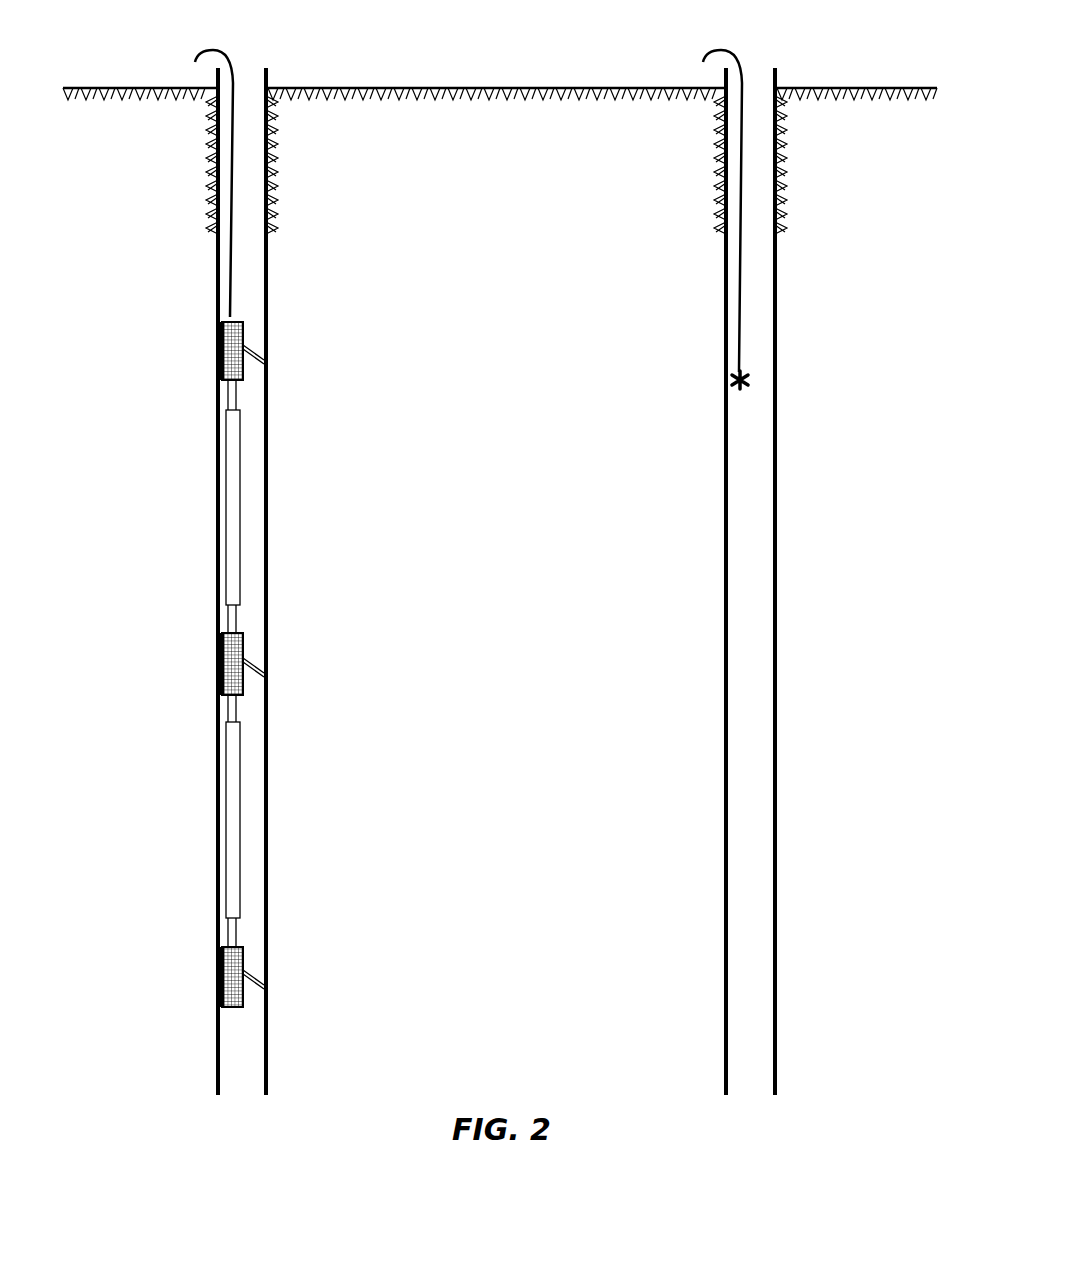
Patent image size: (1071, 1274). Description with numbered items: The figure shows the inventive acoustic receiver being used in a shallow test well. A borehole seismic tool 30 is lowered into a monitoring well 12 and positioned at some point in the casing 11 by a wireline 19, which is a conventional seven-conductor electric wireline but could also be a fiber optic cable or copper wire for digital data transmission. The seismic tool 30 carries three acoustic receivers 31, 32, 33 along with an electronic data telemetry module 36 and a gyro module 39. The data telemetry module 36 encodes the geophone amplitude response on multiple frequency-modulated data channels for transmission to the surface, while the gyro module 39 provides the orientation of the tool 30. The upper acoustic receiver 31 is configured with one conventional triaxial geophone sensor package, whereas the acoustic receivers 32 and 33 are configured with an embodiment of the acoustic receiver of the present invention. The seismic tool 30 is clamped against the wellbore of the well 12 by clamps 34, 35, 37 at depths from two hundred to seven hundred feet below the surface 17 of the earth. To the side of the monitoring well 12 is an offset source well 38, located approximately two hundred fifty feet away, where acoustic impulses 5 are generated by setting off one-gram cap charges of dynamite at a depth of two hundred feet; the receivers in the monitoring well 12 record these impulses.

The well 12 is at (266, 562).
The offset well 38 is at (790, 72).
The surface of the earth 17 is at (443, 88).
The casing 11 is at (267, 290).
The wireline 19 is at (228, 293).
The borehole seismic tool 30 is at (222, 445).
The acoustic receiver 31 is at (222, 350).
The acoustic receiver 32 is at (222, 660).
The acoustic receiver 33 is at (222, 970).
The clamp 34 is at (254, 352).
The clamp 35 is at (254, 665).
The clamp 37 is at (254, 975).
The electronic data telemetry module 36 is at (241, 528).
The gyro module 39 is at (226, 800).
The acoustic impulses 5 is at (746, 386).